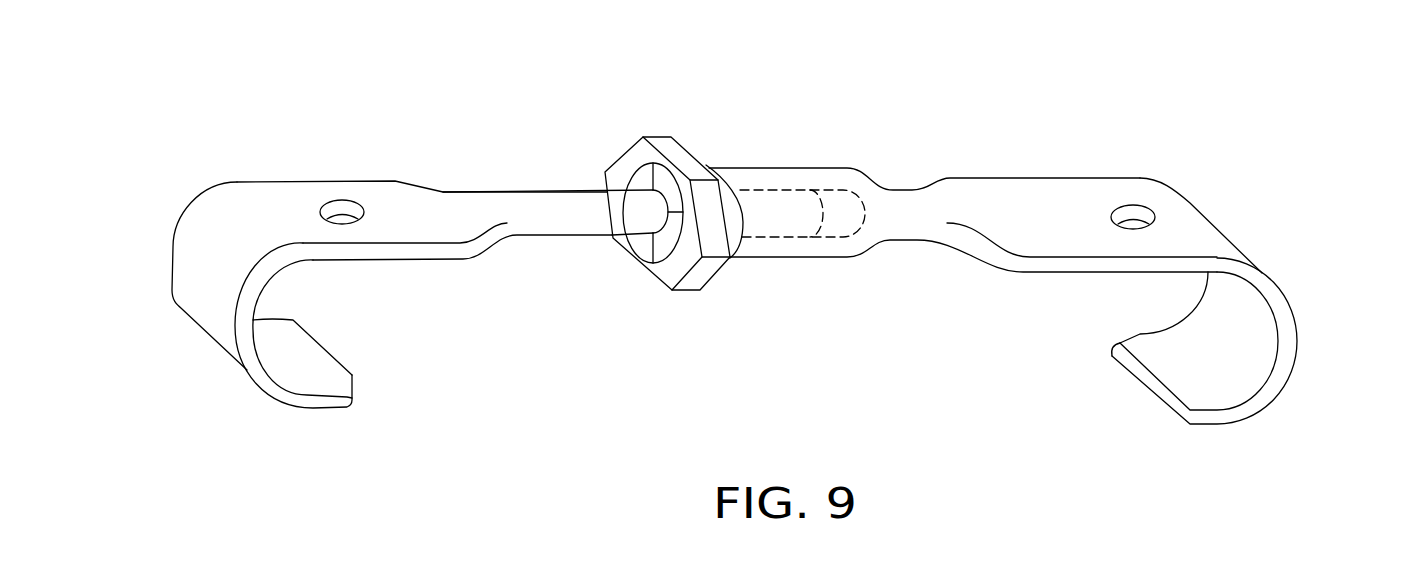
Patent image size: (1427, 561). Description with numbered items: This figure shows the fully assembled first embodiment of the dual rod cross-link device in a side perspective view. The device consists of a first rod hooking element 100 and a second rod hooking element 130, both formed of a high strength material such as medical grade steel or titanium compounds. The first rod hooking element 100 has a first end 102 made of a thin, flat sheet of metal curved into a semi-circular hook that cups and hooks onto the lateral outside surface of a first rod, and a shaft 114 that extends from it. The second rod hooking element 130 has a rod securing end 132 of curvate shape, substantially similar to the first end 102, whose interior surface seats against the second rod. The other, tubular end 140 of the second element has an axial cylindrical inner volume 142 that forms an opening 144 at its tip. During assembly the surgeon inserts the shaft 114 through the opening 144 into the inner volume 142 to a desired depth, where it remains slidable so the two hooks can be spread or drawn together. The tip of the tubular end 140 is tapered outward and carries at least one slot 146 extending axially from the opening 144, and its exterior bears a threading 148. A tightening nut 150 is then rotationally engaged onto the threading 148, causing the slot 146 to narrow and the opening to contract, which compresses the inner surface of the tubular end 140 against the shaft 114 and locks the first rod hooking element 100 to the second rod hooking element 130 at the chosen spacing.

The first rod hooking element 100 is at (338, 240).
The first end 102 is at (182, 317).
The shaft 114 is at (563, 256).
The second rod hooking element 130 is at (1179, 256).
The rod securing end 132 is at (1288, 383).
The tubular end 140 is at (963, 170).
The axial cylindrical inner volume 142 is at (847, 210).
The opening 144 is at (657, 230).
The slot 146 is at (660, 163).
The threading 148 is at (743, 243).
The tightening nut 150 is at (666, 160).